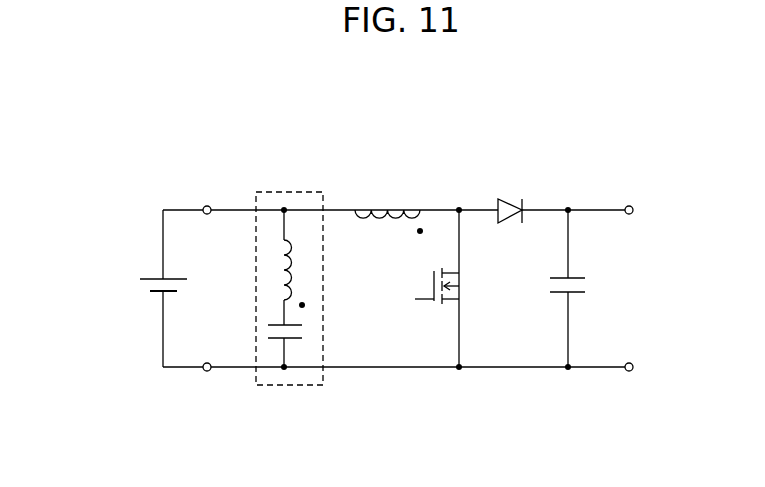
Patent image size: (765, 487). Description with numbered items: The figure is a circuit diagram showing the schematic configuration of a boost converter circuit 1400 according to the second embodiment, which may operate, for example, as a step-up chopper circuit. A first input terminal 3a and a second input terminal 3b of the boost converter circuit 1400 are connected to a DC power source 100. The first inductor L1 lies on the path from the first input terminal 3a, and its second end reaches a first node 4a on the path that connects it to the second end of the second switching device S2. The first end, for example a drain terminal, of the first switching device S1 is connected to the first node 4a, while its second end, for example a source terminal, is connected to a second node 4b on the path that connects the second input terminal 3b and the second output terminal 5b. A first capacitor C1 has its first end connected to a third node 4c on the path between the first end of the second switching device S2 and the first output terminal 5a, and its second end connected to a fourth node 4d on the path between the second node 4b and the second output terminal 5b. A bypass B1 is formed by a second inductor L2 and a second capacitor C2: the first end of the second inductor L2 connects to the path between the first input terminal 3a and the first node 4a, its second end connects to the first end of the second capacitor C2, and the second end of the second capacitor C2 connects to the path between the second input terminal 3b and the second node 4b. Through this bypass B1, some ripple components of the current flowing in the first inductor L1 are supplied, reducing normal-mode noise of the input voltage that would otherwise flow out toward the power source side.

The boost converter circuit 1400 is at (416, 101).
The DC power source 100 is at (140, 287).
The first input terminal 3a is at (205, 206).
The second input terminal 3b is at (205, 372).
The bypass B1 is at (306, 191).
The second inductor L2 is at (300, 272).
The second capacitor C2 is at (300, 332).
The first inductor L1 is at (389, 206).
The first node 4a is at (459, 208).
The second node 4b is at (461, 370).
The first switching device S1 is at (452, 288).
The second switching device S2 is at (511, 194).
The third node 4c is at (569, 207).
The fourth node 4d is at (570, 371).
The first capacitor C1 is at (582, 288).
The first output terminal 5a is at (643, 211).
The second output terminal 5b is at (643, 368).